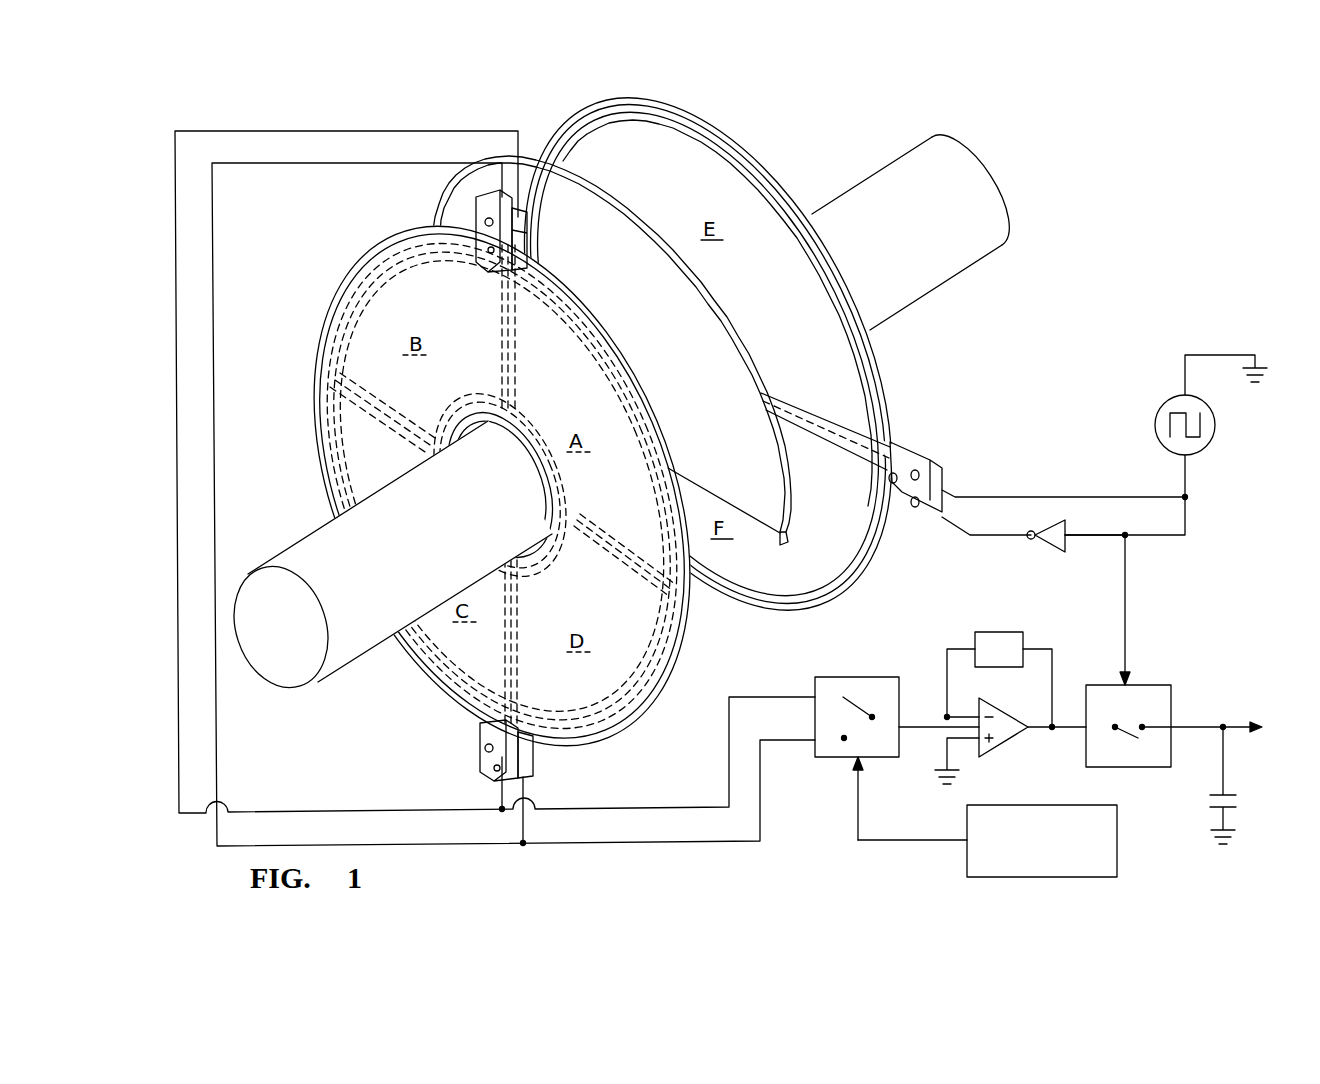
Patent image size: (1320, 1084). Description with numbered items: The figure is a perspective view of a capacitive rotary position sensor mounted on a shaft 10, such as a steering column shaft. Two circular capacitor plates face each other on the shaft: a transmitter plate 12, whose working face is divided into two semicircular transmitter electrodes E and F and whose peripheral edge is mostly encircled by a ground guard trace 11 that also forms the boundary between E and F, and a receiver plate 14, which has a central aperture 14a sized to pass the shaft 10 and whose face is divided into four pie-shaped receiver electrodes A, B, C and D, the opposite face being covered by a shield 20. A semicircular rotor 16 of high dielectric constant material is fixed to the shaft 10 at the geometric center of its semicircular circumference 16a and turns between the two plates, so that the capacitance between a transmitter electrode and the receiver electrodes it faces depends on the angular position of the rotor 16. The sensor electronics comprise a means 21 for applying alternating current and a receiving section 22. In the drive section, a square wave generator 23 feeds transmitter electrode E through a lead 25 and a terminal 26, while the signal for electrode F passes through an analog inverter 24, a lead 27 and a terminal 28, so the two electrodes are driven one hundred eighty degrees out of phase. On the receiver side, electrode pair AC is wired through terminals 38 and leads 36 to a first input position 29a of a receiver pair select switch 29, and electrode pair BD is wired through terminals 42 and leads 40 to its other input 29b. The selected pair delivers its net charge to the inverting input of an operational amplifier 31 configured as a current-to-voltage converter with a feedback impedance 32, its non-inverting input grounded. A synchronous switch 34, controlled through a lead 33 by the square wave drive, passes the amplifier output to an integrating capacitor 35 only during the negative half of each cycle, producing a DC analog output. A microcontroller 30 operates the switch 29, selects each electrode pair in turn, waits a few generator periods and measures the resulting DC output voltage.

The shaft 10 is at (972, 242).
The ground guard trace 11 is at (703, 142).
The transmitter plate 12 is at (878, 332).
The receiver plate 14 is at (376, 236).
The central aperture 14a is at (443, 467).
The rotor 16 is at (770, 388).
The semicircular circumference 16a is at (668, 240).
The shield 20 is at (642, 638).
The means for applying alternating current 21 is at (1102, 392).
The sensor electronics 22 is at (1175, 568).
The square wave generator 23 is at (1160, 410).
The analog inverter 24 is at (1048, 546).
The lead 25 is at (1112, 497).
The terminal 26 is at (905, 462).
The lead 27 is at (1093, 538).
The terminal 28 is at (928, 510).
The receiver pair select switch 29 is at (907, 672).
The first input position 29a is at (843, 697).
The input 29b is at (844, 740).
The microcontroller 30 is at (1117, 832).
The operational amplifier 31 is at (997, 750).
The impedance 32 is at (1005, 631).
The lead 33 is at (1128, 630).
The synchronous switch 34 is at (1157, 680).
The integrating capacitor 35 is at (1240, 800).
The leads 36 is at (303, 130).
The terminals 38 is at (524, 215).
The leads 40 is at (297, 165).
The terminals 42 is at (519, 212).